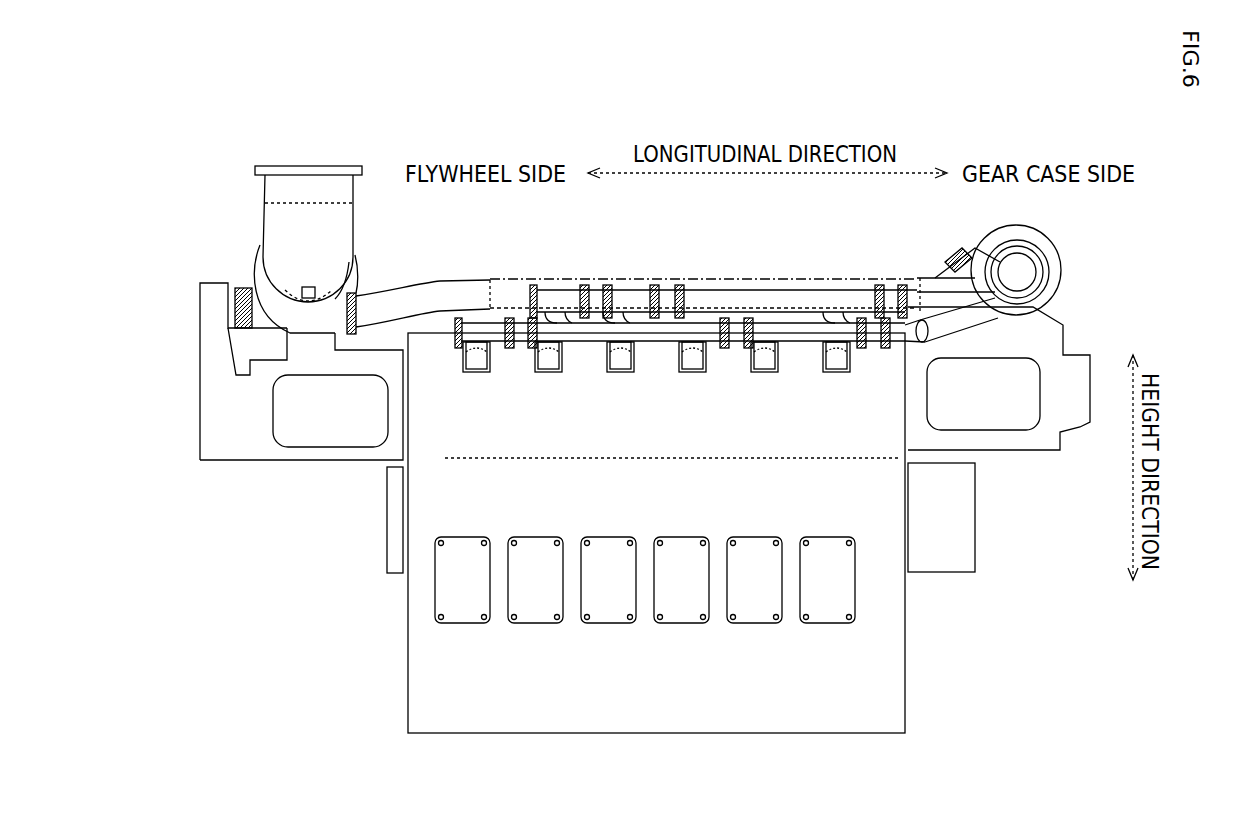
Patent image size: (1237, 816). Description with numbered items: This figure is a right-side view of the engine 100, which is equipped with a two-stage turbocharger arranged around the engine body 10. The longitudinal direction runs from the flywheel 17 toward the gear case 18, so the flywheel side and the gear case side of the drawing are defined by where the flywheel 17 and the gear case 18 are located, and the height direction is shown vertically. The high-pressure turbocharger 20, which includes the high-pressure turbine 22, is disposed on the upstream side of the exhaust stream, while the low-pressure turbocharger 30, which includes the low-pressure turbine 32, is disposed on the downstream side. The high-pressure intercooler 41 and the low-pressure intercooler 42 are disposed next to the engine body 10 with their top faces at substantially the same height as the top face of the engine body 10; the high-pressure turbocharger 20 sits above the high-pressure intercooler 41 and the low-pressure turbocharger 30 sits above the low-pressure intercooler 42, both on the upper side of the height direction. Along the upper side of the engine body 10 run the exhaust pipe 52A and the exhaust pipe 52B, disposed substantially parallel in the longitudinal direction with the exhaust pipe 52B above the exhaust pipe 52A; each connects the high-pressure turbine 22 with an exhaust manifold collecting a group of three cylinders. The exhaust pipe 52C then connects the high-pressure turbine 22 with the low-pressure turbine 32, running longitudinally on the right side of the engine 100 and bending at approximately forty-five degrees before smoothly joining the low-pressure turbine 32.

The engine 100 is at (192, 130).
The engine body 10 is at (930, 620).
The flywheel 17 is at (386, 510).
The gear case 18 is at (972, 553).
The high-pressure turbocharger 20 is at (1016, 283).
The high-pressure turbine 22 is at (1056, 290).
The low-pressure turbocharger 30 is at (280, 250).
The low-pressure turbine 32 is at (258, 272).
The high-pressure intercooler 41 is at (1047, 449).
The low-pressure intercooler 42 is at (308, 461).
The exhaust pipe 52A is at (578, 345).
The exhaust pipe 52B is at (797, 300).
The exhaust pipe 52C is at (484, 300).